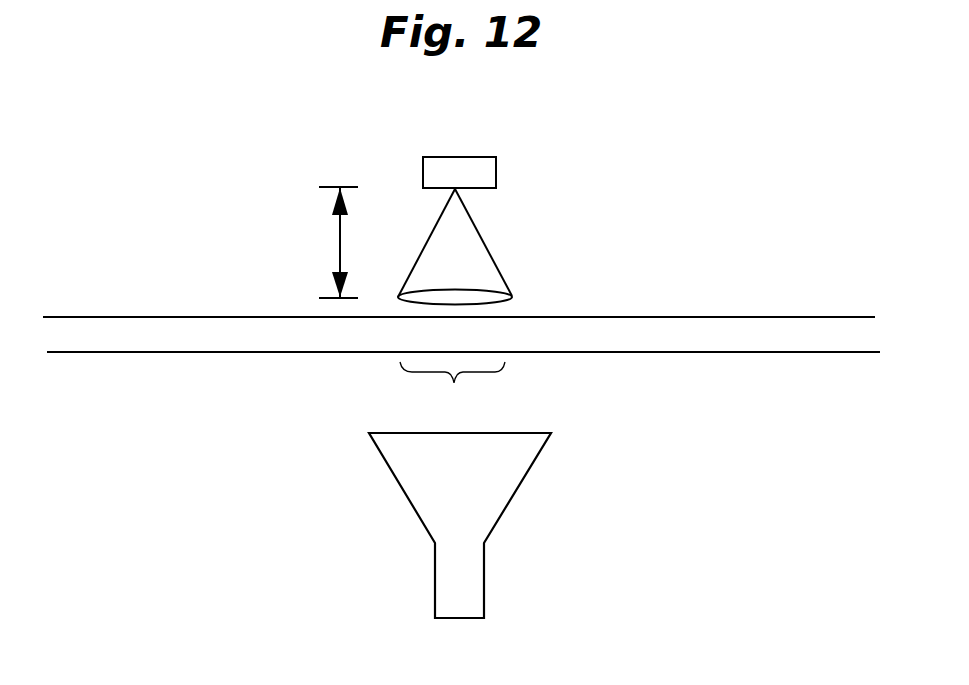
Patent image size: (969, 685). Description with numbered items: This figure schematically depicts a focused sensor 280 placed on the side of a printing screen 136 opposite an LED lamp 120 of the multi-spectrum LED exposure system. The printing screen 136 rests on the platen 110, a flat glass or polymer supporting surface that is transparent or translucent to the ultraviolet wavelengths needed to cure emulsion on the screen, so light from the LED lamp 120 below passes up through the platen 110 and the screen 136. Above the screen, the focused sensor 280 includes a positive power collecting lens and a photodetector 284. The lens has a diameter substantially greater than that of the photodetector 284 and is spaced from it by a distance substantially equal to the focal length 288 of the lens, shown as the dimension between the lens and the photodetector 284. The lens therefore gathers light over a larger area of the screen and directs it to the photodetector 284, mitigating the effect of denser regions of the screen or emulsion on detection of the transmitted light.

The platen 110 is at (142, 352).
The printing screen 136 is at (155, 317).
The LED lamp 120 is at (484, 592).
The focused sensor 280 is at (531, 207).
The photodetector 284 is at (496, 175).
The focal length 288 is at (338, 242).